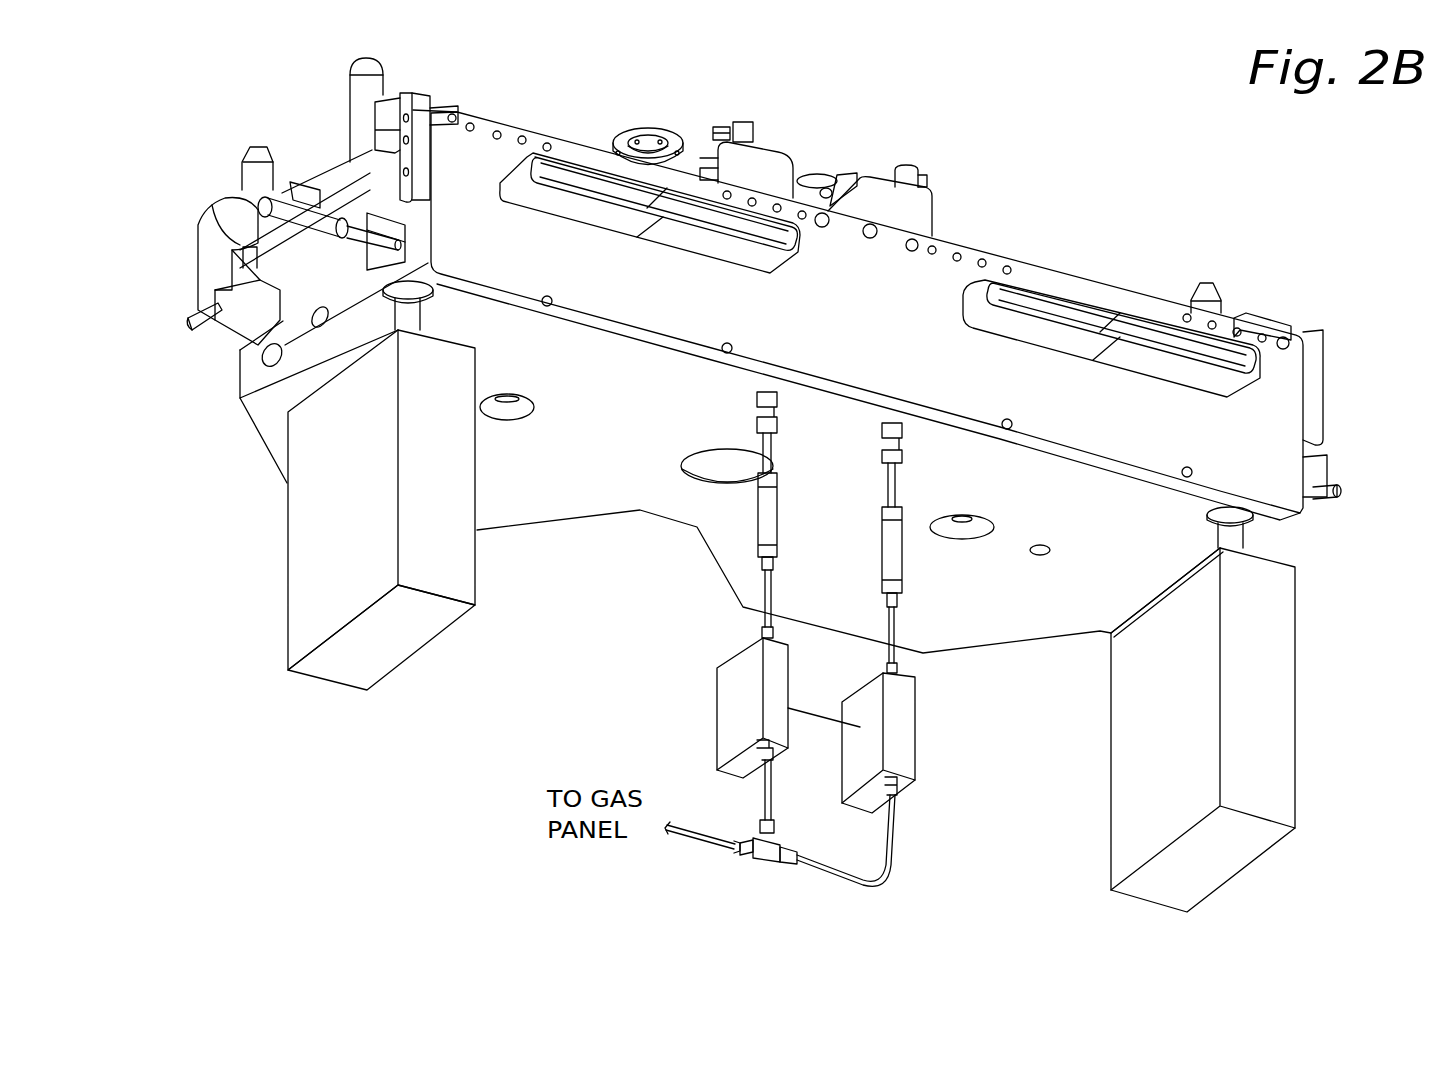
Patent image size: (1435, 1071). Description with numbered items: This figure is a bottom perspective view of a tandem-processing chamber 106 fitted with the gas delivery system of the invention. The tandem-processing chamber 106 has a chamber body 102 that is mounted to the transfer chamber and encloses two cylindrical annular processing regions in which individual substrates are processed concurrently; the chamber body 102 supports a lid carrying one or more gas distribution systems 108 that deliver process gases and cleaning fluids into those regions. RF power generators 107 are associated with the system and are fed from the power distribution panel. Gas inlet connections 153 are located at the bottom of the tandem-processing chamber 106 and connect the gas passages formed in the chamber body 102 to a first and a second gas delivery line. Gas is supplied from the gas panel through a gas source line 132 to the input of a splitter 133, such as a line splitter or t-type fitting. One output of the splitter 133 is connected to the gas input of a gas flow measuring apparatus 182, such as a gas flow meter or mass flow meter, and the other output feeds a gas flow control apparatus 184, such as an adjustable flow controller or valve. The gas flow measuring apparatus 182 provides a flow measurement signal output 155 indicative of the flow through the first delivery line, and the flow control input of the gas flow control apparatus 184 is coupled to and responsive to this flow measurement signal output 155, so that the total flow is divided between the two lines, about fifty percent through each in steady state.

The chamber body 102 is at (238, 374).
The tandem-processing chamber 106 is at (1178, 196).
The RF power generator 107 is at (287, 581).
The gas distribution system 108 is at (772, 147).
The gas source line 132 is at (697, 843).
The splitter 133 is at (763, 866).
The gas inlet connection 153 is at (756, 413).
The flow measurement signal output 155 is at (808, 708).
The gas flow measuring apparatus 182 is at (917, 726).
The gas flow control apparatus 184 is at (716, 705).